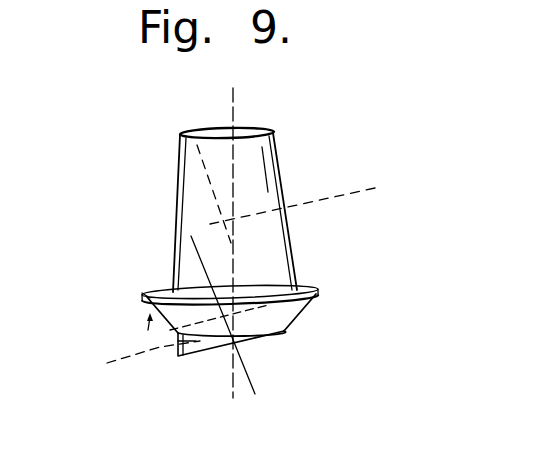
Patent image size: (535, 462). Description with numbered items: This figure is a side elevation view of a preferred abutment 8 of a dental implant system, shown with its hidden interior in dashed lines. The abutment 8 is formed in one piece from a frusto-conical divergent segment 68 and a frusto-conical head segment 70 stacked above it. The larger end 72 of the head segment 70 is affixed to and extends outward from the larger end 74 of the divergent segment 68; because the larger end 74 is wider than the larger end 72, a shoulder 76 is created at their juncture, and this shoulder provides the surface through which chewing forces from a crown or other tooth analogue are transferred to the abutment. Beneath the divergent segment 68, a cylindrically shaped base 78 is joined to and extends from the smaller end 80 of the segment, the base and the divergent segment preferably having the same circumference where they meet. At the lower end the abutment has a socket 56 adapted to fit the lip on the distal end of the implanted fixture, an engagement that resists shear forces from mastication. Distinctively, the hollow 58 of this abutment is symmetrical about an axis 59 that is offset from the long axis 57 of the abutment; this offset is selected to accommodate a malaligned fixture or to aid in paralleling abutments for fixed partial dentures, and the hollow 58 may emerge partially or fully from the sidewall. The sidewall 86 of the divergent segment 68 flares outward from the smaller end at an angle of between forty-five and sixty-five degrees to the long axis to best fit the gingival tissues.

The abutment 8 is at (116, 148).
The socket 56 is at (132, 351).
The long axis 57 is at (233, 112).
The hollow 58 is at (305, 194).
The axis 59 is at (177, 204).
The divergent segment 68 is at (302, 308).
The head segment 70 is at (282, 254).
The larger end of head segment 72 is at (292, 276).
The larger end of divergent segment 74 is at (315, 297).
The shoulder 76 is at (143, 292).
The base 78 is at (284, 333).
The smaller end of divergent segment 80 is at (289, 321).
The sidewall of divergent segment 86 is at (151, 313).